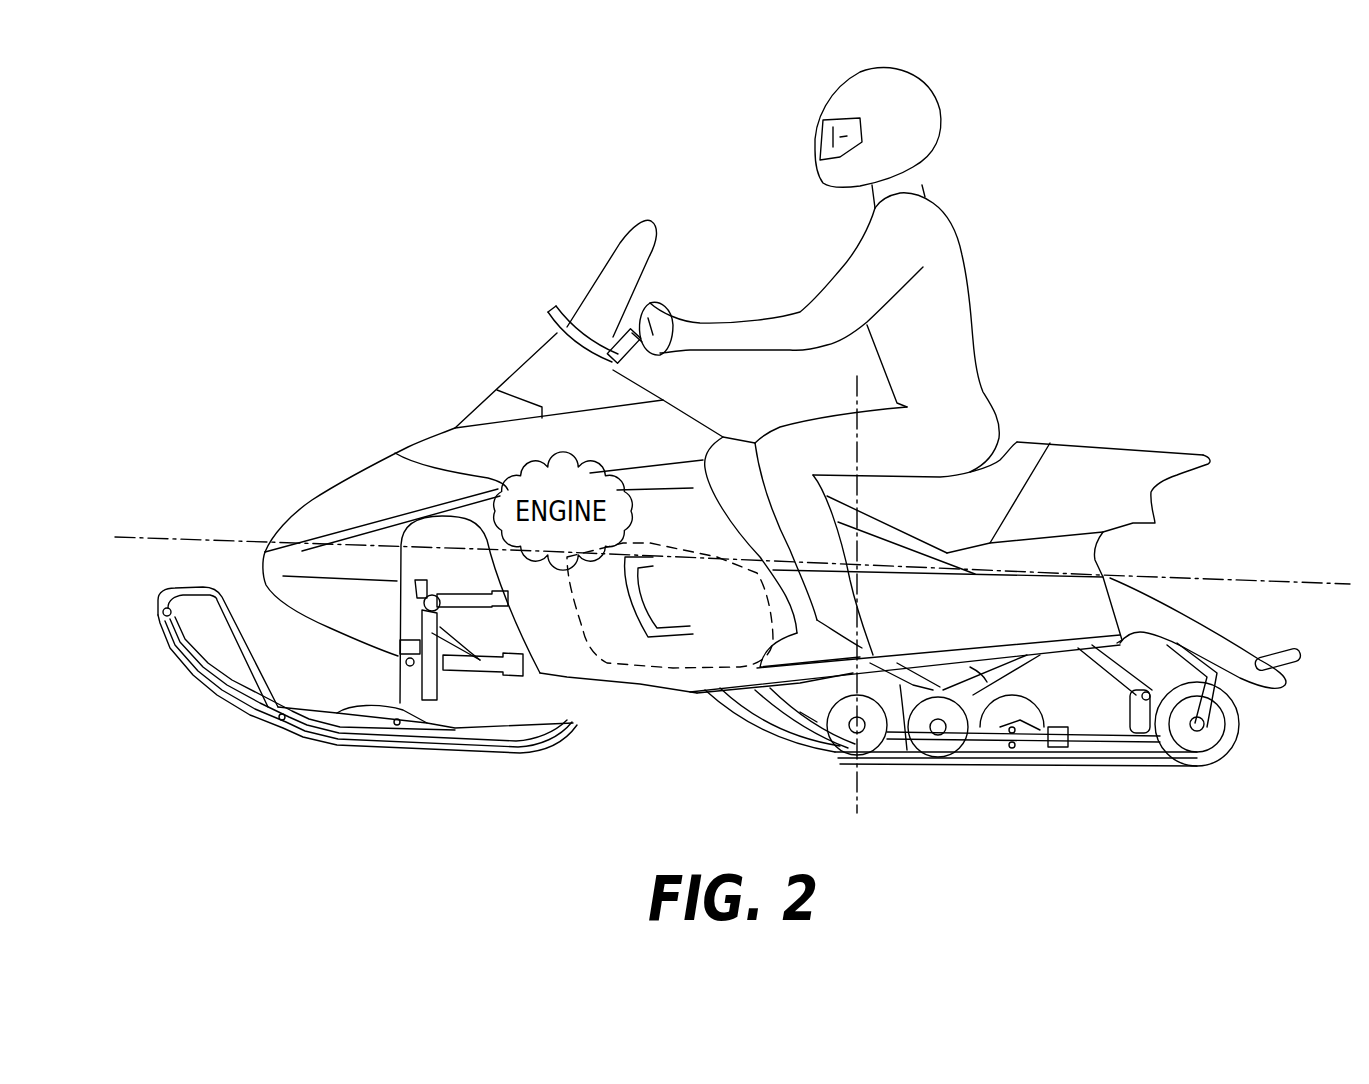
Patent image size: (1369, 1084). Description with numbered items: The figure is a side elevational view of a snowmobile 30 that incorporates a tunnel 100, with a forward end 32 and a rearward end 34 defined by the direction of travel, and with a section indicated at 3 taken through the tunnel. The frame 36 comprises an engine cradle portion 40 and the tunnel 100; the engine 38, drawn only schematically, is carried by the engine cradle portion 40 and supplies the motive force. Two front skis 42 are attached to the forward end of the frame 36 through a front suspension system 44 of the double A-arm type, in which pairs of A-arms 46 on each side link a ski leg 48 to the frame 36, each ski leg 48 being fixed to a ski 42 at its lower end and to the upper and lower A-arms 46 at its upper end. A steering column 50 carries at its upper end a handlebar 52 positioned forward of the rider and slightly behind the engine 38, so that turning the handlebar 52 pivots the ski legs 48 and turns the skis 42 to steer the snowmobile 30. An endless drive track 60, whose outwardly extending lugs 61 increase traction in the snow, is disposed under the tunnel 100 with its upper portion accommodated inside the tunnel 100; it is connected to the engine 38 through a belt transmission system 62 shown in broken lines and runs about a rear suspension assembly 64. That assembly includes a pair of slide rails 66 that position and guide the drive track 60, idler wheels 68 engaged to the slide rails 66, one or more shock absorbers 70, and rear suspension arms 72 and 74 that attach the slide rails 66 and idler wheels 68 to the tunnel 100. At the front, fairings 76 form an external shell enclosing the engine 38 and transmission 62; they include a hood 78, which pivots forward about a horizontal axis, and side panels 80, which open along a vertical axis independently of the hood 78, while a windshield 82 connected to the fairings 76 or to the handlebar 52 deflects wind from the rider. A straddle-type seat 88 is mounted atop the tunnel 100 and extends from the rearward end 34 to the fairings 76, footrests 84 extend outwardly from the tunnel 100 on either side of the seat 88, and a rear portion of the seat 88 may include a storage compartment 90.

The section line 3- 3 is at (855, 376).
The snowmobile 30 is at (472, 330).
The forward end 32 is at (303, 448).
The rearward end 34 is at (1160, 414).
The frame 36 is at (1114, 563).
The engine 38 is at (395, 453).
The engine cradle portion 40 is at (603, 680).
The front skis 42 is at (310, 748).
The front suspension system 44 is at (410, 618).
The A-arms 46 is at (470, 660).
The ski leg 48 is at (420, 680).
The steering column 50 is at (561, 319).
The handlebar 52 is at (636, 316).
The endless drive track 60 is at (780, 745).
The lugs 61 is at (168, 534).
The belt transmission system 62 is at (661, 672).
The rear suspension assembly 64 is at (1040, 747).
The slide rails 66 is at (1090, 737).
The idler wheels 68 is at (1212, 751).
The shock absorbers 70 is at (993, 705).
The rear suspension arm 72 is at (906, 692).
The rear suspension arm 74 is at (1130, 732).
The fairings 76 is at (347, 478).
The hood 78 is at (525, 380).
The side panels 80 is at (567, 650).
The windshield 82 is at (627, 232).
The footrests 84 is at (942, 695).
The straddle-type seat 88 is at (1028, 443).
The storage compartment 90 is at (1178, 465).
The tunnel 100 is at (942, 628).